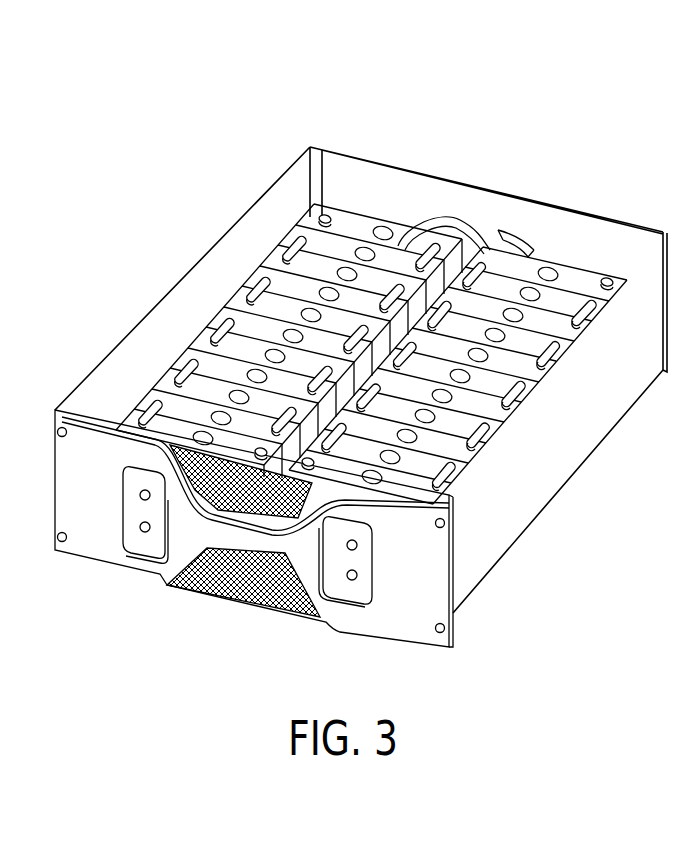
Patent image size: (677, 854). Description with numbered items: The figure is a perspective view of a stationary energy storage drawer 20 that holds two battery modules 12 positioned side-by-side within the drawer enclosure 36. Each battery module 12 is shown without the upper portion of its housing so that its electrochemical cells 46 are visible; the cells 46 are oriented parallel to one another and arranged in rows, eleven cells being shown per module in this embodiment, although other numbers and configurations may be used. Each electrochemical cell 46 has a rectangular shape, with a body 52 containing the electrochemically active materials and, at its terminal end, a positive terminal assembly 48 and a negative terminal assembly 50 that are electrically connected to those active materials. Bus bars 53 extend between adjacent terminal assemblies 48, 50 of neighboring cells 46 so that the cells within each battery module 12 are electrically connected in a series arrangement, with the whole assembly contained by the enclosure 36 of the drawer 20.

The stationary energy storage drawer 20 is at (317, 128).
The battery module 12 is at (398, 212).
The electrochemical cell 46 is at (287, 243).
The positive terminal assembly 48 is at (433, 232).
The negative terminal assembly 50 is at (333, 203).
The body 52 is at (400, 238).
The bus bar 53 is at (305, 222).
The enclosure 36 is at (492, 550).